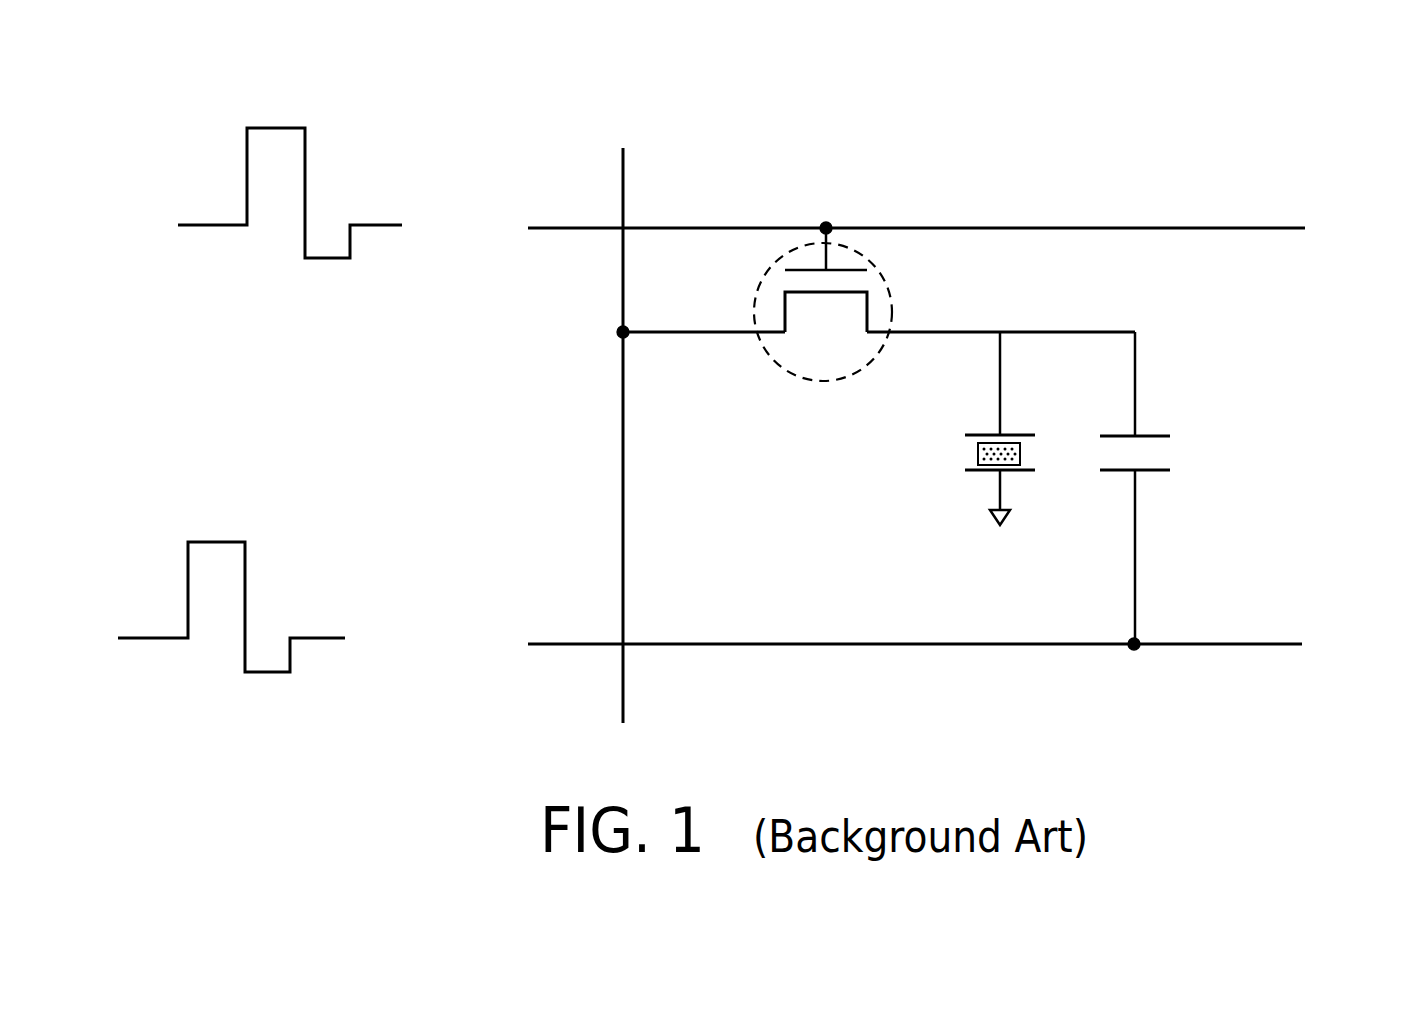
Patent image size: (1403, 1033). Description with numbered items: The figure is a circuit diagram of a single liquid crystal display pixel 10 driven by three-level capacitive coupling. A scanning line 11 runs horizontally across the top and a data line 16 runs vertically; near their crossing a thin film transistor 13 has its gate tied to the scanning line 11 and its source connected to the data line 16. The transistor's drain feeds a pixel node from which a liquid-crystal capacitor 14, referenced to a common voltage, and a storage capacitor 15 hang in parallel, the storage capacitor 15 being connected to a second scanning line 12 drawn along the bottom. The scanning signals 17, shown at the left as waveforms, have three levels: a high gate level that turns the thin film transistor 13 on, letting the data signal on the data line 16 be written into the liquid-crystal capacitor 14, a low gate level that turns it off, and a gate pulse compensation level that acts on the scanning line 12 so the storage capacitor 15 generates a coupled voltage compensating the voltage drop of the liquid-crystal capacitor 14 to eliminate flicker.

The pixel 10 is at (950, 158).
The scanning line 11 is at (1218, 229).
The scanning line 12 is at (1230, 645).
The thin film transistor 13 is at (893, 303).
The liquid-crystal capacitor 14 is at (970, 457).
The storage capacitor 15 is at (1153, 452).
The data line 16 is at (622, 475).
The scanning signal 17 is at (333, 322).